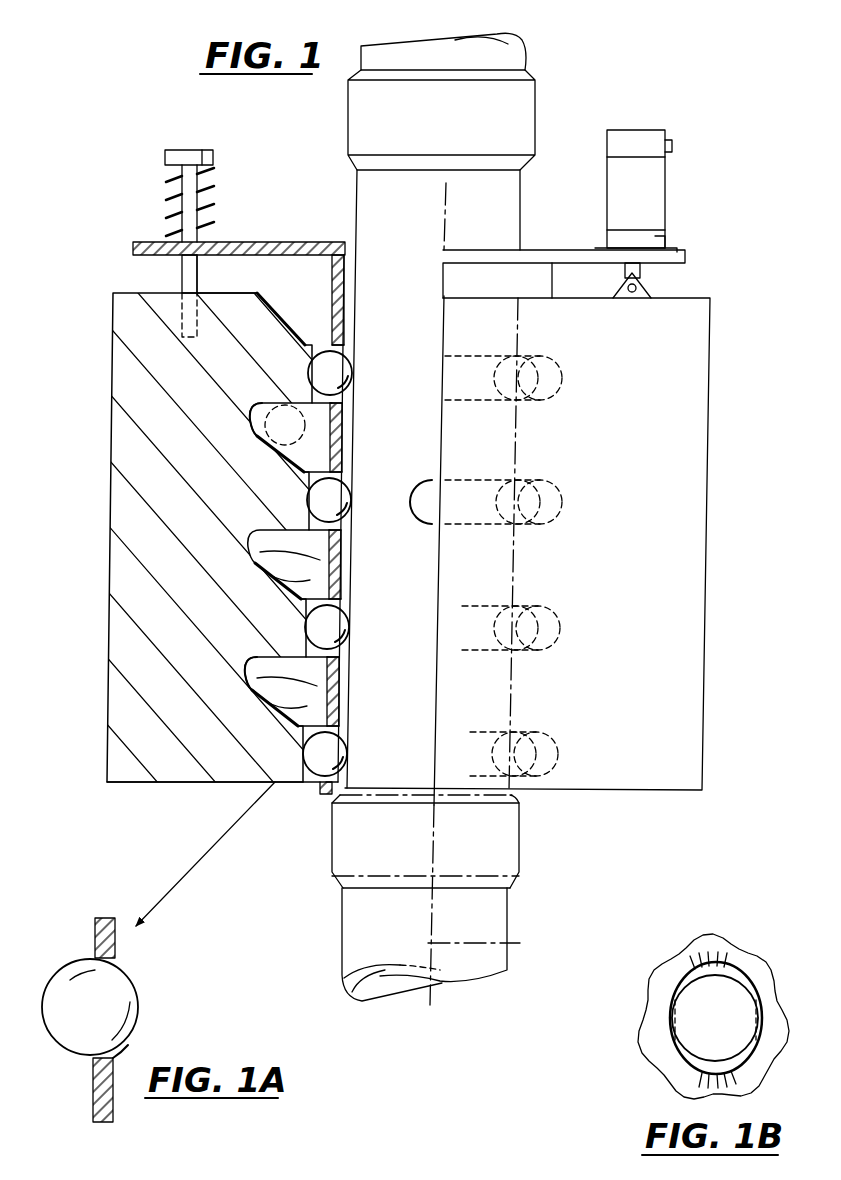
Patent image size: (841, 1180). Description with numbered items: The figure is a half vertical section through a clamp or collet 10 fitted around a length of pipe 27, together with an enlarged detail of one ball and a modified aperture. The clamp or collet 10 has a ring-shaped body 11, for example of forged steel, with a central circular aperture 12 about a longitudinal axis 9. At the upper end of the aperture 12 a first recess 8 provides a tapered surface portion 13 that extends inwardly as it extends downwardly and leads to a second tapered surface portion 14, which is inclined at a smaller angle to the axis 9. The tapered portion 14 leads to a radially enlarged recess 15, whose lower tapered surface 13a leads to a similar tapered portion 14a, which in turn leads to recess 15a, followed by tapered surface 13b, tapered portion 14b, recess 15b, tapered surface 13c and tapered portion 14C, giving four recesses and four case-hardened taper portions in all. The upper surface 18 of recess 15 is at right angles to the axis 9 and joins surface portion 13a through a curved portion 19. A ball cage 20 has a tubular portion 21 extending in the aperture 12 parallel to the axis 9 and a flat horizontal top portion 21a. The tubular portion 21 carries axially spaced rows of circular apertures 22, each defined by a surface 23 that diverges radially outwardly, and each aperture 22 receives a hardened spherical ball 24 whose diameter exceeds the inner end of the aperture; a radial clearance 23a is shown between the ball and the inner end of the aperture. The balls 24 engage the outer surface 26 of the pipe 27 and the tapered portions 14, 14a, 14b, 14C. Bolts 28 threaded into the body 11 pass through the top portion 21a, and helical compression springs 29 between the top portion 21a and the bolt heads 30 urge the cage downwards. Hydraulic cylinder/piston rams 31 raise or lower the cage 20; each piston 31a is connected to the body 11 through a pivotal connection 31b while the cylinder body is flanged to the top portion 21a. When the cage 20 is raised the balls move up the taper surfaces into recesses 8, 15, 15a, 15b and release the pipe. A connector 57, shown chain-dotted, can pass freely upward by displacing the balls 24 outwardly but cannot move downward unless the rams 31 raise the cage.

In FIG. 1, the first recess 8 is at (272, 290).
In FIG. 1, the longitudinal axis 9 is at (520, 943).
In FIG. 1, the clamp or collet 10 is at (172, 797).
In FIG. 1, the body 11 is at (132, 585).
In FIG. 1, the aperture 12 is at (304, 796).
In FIG. 1, the tapered surface portion 13 is at (288, 285).
In FIG. 1, the lower tapered surface 13a is at (299, 468).
In FIG. 1, the tapered surface 13b is at (286, 588).
In FIG. 1, the tapered surface 13c is at (270, 732).
In FIG. 1, the second tapered surface portion 14 is at (345, 308).
In FIG. 1, the tapered portion 14a is at (335, 536).
In FIG. 1, the tapered portion 14b is at (333, 665).
In FIG. 1, the tapered portion 14C is at (318, 795).
In FIG. 1, the radially enlarged recess 15 is at (278, 425).
In FIG. 1, the recess 15a is at (284, 572).
In FIG. 1, the recess 15b is at (281, 707).
In FIG. 1, the upper surface 18 is at (340, 428).
In FIG. 1, the curved portion 19 is at (262, 408).
In FIG. 1, the ball cage 20 is at (140, 238).
In FIG. 1, the tubular portion 21 is at (346, 740).
In FIG. 1A, the tubular portion 21 is at (96, 935).
In FIG. 1, the flat horizontal top portion 21a is at (686, 260).
In FIG. 1, the aperture 22 is at (338, 358).
In FIG. 1B, the aperture 22 is at (740, 968).
In FIG. 1, the surface 23 is at (313, 625).
In FIG. 1A, the surface 23 is at (96, 1062).
In FIG. 1A, the radial clearance 23a is at (120, 1052).
In FIG. 1, the spherical ball 24 is at (336, 628).
In FIG. 1A, the spherical ball 24 is at (110, 992).
In FIG. 1B, the spherical ball 24 is at (708, 1034).
In FIG. 1, the outer surface 26 is at (508, 192).
In FIG. 1, the pipe 27 is at (530, 222).
In FIG. 1, the bolt 28 is at (182, 272).
In FIG. 1, the helical compression spring 29 is at (168, 190).
In FIG. 1, the head 30 is at (180, 148).
In FIG. 1, the hydraulic cylinder/piston ram 31 is at (665, 178).
In FIG. 1, the piston 31a is at (640, 272).
In FIG. 1, the pivotal connection 31b is at (626, 290).
In FIG. 1, the connector 57 is at (522, 850).